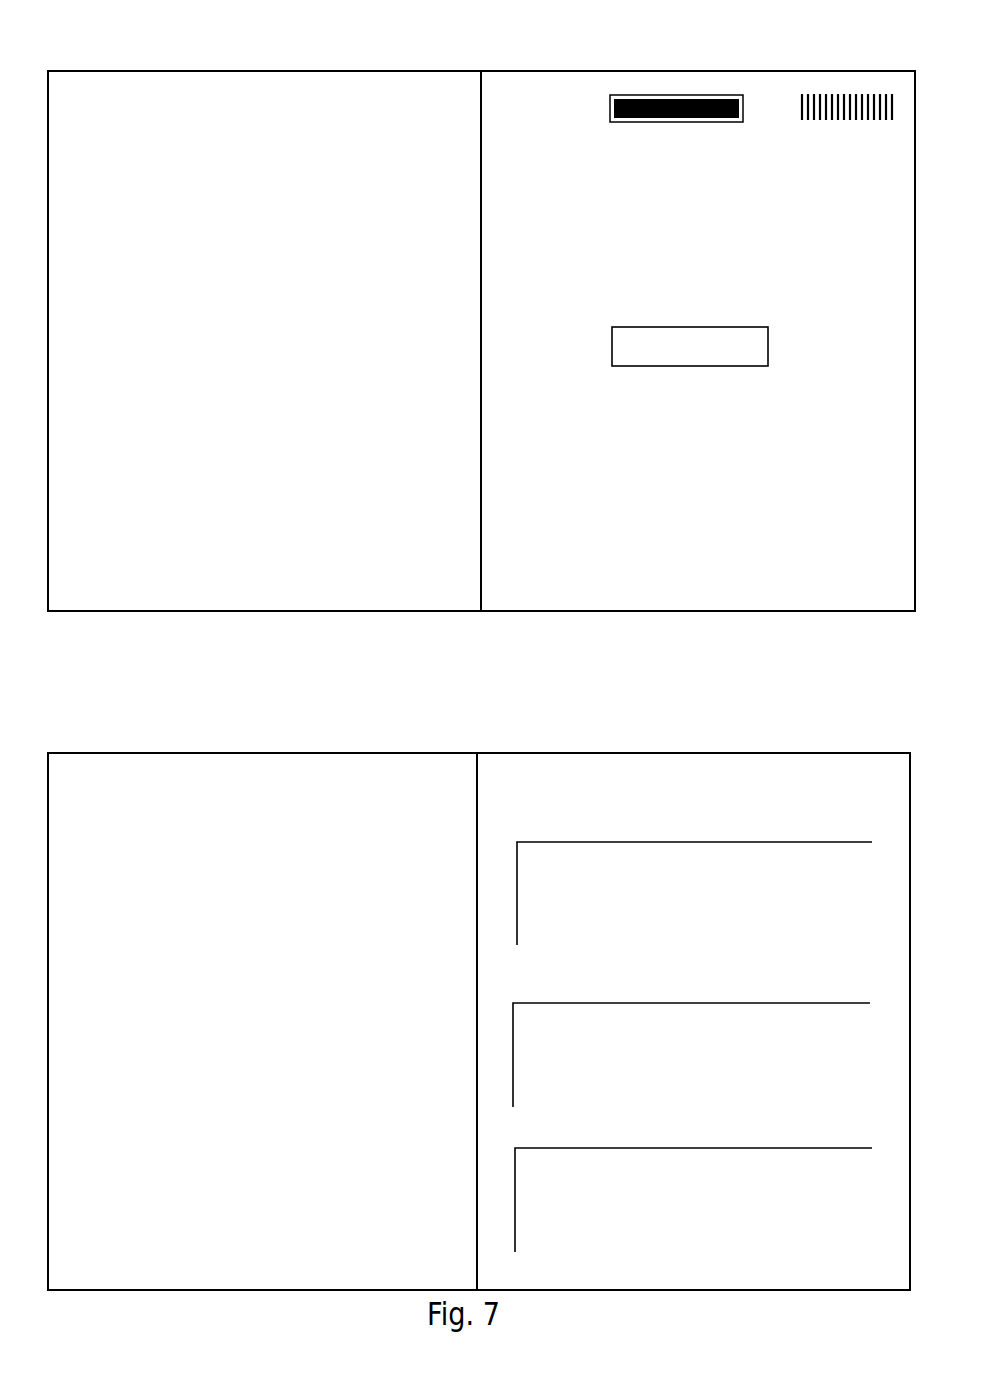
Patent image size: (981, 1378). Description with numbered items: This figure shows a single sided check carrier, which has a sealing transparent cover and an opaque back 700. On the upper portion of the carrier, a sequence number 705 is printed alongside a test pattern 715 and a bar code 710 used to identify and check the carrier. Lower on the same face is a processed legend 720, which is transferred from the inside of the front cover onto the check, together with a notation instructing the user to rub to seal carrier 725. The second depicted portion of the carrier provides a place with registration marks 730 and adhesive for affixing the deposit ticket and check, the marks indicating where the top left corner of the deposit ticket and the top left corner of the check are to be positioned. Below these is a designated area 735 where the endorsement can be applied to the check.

The opaque back 700 is at (429, 70).
The sequence number 705 is at (547, 83).
The bar code 710 is at (863, 82).
The test pattern 715 is at (667, 83).
The processed legend 720 is at (611, 368).
The rub to seal carrier notation 725 is at (742, 608).
The registration marks 730 is at (503, 1033).
The designated endorsement area 735 is at (503, 1200).